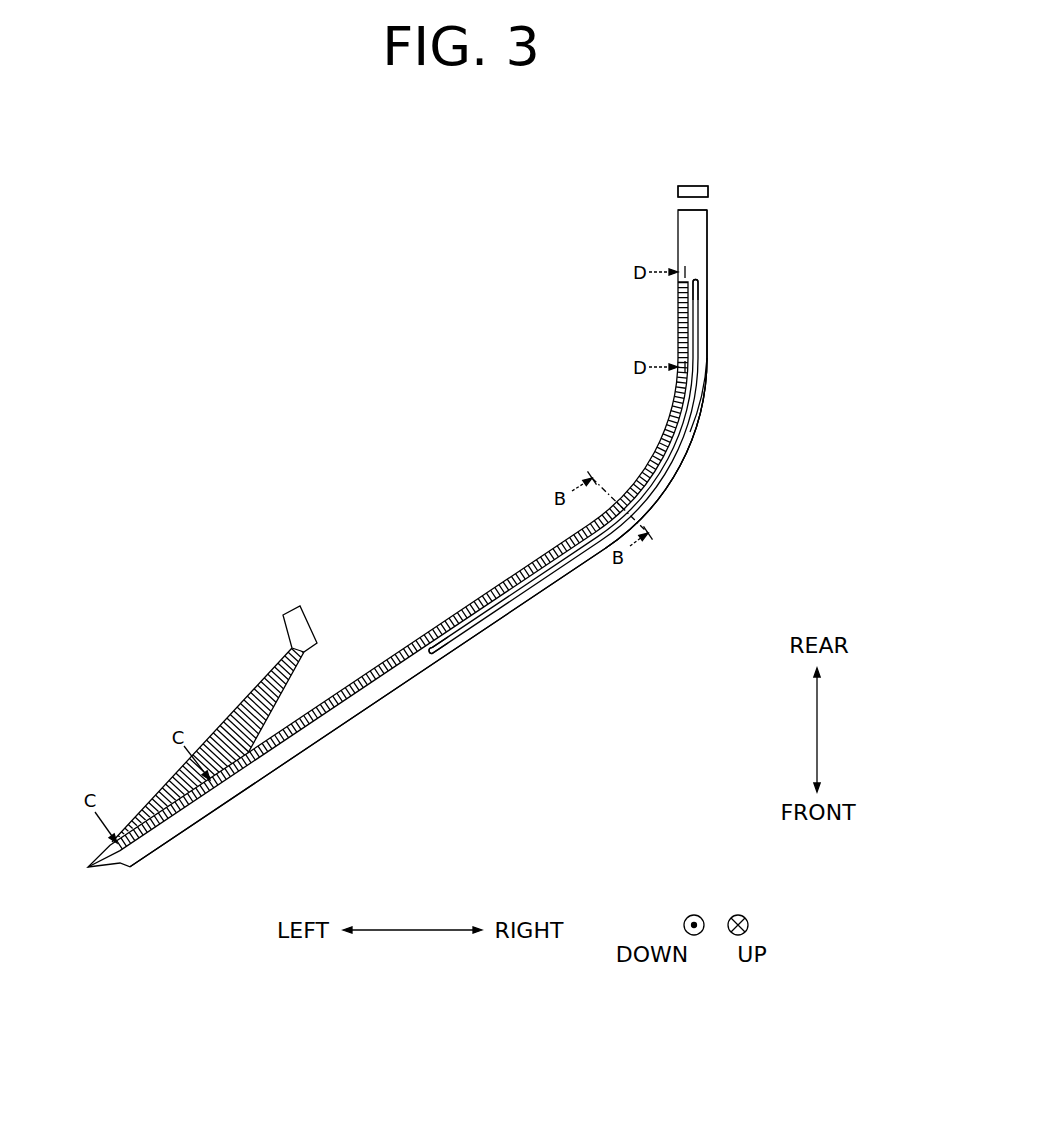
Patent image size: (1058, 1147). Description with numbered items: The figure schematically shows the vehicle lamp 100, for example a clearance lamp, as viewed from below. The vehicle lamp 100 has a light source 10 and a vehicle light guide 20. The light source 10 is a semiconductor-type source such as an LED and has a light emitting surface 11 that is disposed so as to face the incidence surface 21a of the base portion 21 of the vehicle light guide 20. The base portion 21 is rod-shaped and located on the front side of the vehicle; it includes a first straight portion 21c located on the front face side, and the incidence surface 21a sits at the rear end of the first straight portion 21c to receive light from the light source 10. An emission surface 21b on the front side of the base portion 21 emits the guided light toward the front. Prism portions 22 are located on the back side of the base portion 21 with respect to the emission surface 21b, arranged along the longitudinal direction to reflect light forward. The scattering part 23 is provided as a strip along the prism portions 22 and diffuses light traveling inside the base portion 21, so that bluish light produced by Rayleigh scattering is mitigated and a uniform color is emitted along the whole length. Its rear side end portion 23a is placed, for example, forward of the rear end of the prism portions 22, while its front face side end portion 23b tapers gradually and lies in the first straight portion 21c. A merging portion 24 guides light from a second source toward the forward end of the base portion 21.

The light source 10 is at (694, 180).
The light emitting surface 11 is at (710, 199).
The vehicle light guide 20 is at (520, 620).
The base portion 21 is at (702, 242).
The incidence surface 21a is at (687, 210).
The emission surface 21b is at (670, 477).
The first straight portion 21c is at (714, 408).
The prism portions 22 is at (438, 625).
The scattering part 23 is at (700, 332).
The rear side end portion 23a is at (707, 272).
The front face side end portion 23b is at (433, 650).
The merging portion 24 is at (228, 704).
The vehicle lamp 100 is at (366, 316).